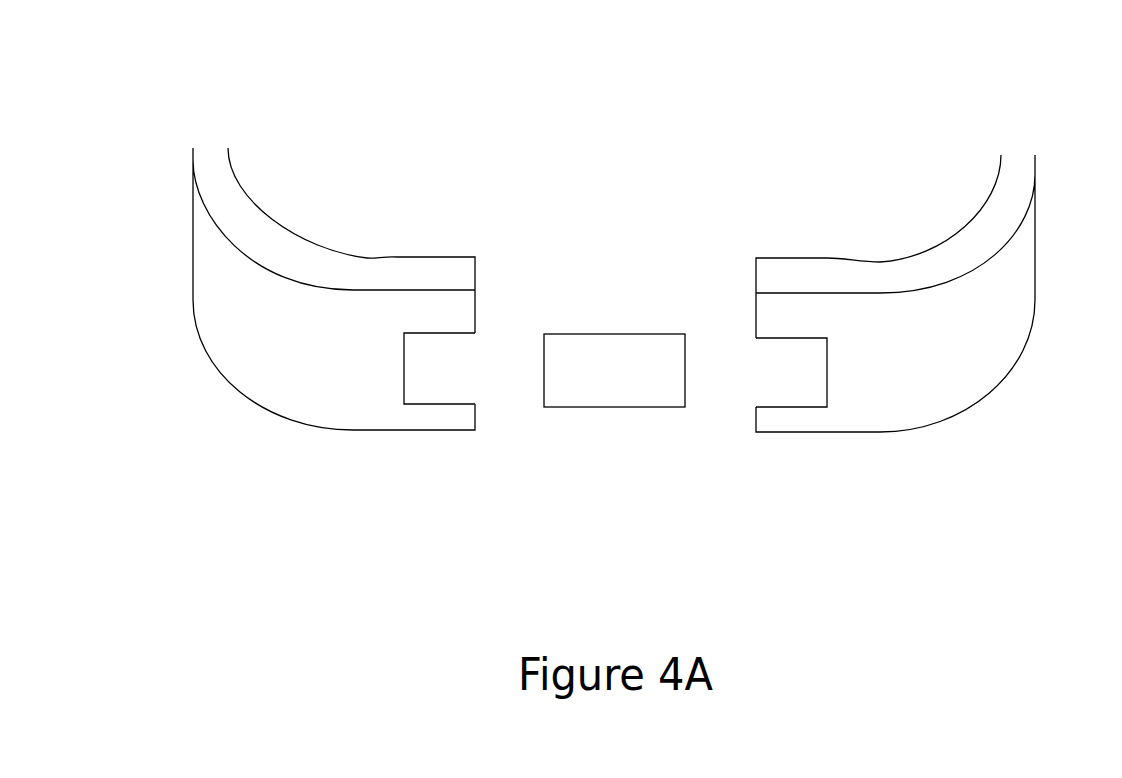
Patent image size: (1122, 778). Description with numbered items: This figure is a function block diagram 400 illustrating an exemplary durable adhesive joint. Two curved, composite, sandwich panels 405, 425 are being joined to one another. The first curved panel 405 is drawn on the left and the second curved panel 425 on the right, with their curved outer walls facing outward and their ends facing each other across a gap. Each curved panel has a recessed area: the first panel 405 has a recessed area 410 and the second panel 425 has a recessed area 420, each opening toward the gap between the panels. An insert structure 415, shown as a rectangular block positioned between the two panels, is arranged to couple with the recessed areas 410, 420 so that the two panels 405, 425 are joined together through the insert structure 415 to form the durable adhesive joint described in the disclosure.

The connector assembly 400 is at (578, 303).
The curved composite sandwich panel 405 is at (264, 332).
The recessed area 410 is at (443, 368).
The insert structure 415 is at (614, 371).
The recessed area 420 is at (791, 372).
The curved composite sandwich panel 425 is at (930, 337).